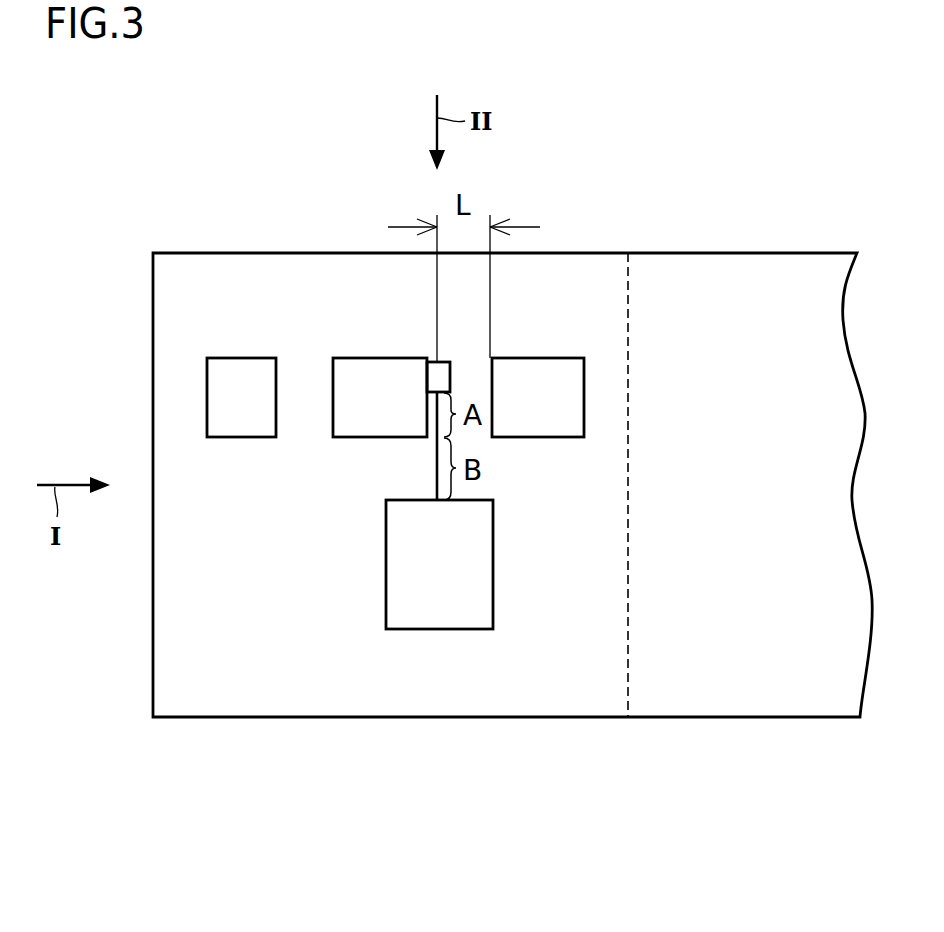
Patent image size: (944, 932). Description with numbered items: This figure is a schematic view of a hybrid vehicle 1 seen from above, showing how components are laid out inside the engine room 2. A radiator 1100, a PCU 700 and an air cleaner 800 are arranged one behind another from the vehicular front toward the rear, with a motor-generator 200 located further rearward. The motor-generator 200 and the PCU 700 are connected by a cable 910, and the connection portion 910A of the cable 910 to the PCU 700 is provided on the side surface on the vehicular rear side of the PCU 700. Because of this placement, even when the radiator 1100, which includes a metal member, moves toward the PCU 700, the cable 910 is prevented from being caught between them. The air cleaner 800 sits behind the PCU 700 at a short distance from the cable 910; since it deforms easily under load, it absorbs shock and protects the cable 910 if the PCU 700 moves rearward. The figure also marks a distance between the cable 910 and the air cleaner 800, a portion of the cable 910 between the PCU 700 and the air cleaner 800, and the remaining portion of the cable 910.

The hybrid vehicle 1 is at (163, 158).
The engine room 2 is at (228, 252).
The radiator 1100 is at (205, 393).
The PCU (Power Control Unit) 700 is at (330, 382).
The connection portion 910A is at (432, 360).
The cable 910 is at (437, 467).
The air cleaner 800 is at (541, 358).
The motor-generator 200 is at (438, 630).